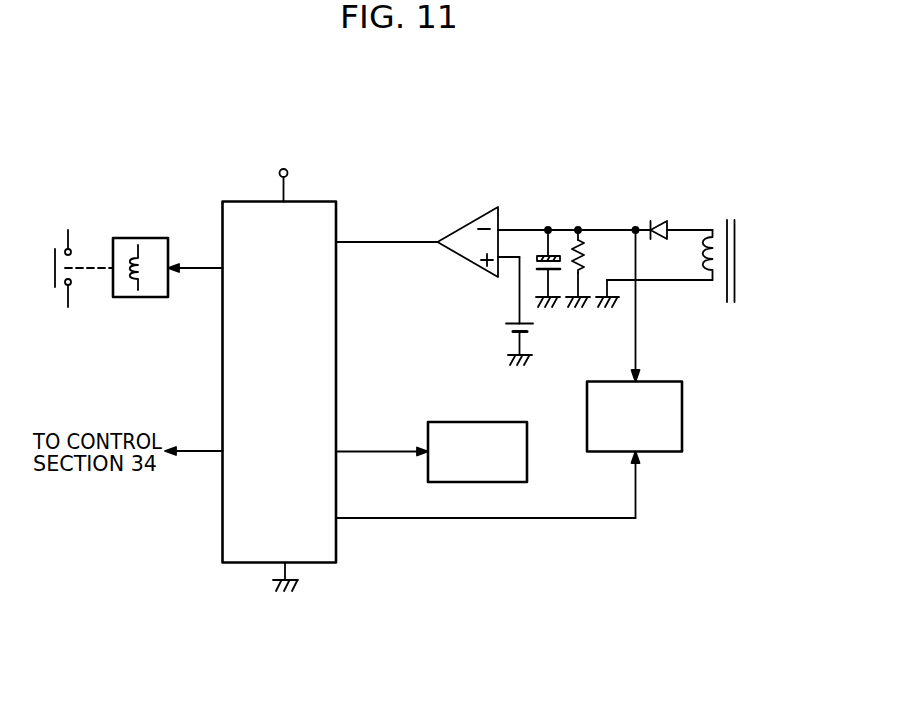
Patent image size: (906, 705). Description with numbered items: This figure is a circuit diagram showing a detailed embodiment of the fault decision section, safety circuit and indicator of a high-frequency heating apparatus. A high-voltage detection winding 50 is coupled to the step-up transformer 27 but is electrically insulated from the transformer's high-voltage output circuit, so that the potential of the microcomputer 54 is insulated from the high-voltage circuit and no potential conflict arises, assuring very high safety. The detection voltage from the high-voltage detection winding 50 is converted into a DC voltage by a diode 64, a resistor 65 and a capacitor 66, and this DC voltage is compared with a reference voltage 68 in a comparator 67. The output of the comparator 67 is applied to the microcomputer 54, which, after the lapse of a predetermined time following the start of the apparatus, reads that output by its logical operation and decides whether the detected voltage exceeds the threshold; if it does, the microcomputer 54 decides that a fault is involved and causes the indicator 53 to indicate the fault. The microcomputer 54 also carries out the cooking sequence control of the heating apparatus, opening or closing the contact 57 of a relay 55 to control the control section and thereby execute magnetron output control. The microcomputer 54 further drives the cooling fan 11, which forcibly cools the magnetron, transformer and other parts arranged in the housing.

The cooling fan 11 is at (682, 412).
The step-up transformer 27 is at (737, 238).
The high-voltage detection winding 50 is at (708, 250).
The indicator 53 is at (497, 421).
The microcomputer 54 is at (336, 355).
The relay 55 is at (158, 238).
The contact 57 is at (52, 277).
The diode 64 is at (663, 218).
The resistor 65 is at (583, 263).
The capacitor 66 is at (537, 252).
The comparator 67 is at (445, 248).
The reference voltage 68 is at (504, 329).